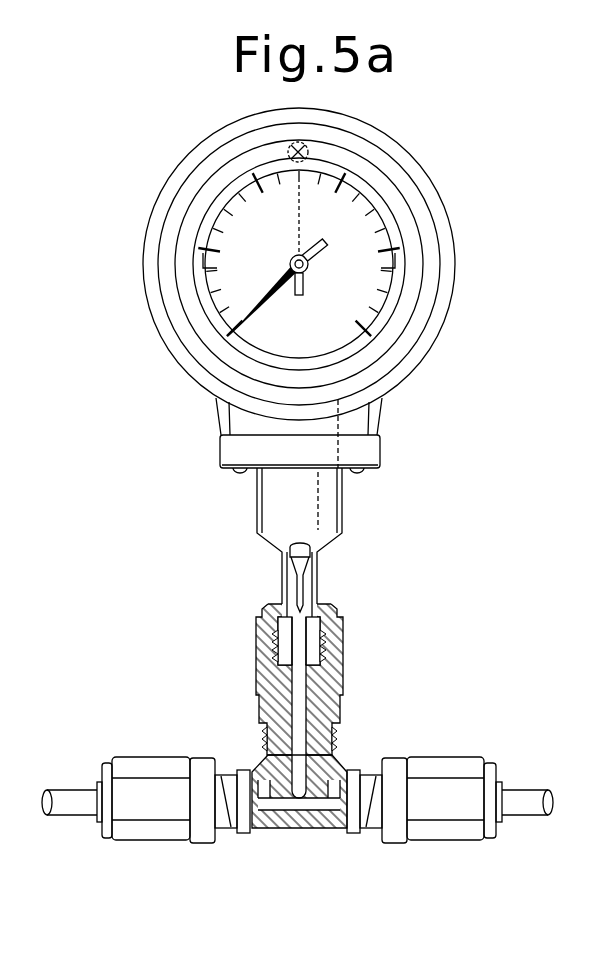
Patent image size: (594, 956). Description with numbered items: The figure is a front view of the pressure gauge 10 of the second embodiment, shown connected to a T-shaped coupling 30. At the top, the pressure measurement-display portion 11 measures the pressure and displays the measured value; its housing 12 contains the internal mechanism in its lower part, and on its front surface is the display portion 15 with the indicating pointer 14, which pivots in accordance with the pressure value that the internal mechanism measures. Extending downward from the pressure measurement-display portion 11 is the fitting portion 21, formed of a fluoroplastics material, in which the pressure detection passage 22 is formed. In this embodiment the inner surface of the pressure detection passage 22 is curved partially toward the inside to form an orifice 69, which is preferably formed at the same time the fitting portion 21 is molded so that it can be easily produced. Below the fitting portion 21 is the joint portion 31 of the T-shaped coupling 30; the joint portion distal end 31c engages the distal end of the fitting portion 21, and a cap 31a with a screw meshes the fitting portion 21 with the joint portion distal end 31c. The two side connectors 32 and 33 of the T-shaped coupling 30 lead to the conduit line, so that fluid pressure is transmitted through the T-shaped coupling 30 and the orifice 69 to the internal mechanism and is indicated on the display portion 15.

The pressure gauge 10 is at (432, 141).
The housing 12 is at (447, 214).
The indicating pointer 14 is at (253, 291).
The display portion 15 is at (353, 287).
The pressure measurement-display portion 11 is at (416, 420).
The fitting portion 21 is at (350, 560).
The orifice 69 is at (282, 580).
The pressure detection passage 22 is at (333, 602).
The joint portion 31 is at (368, 652).
The joint portion distal end 31c is at (289, 647).
The cap with a screw 31a is at (343, 710).
The T-shaped coupling 30 is at (340, 858).
The left hose connector 32 is at (130, 855).
The right hose connector 33 is at (470, 860).